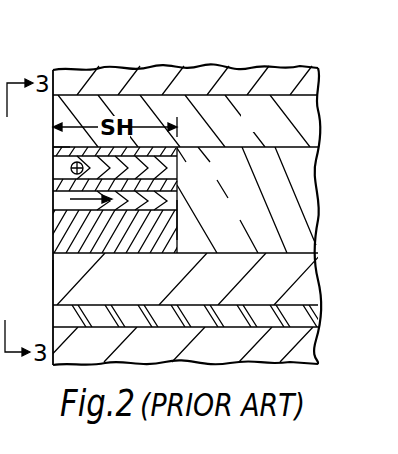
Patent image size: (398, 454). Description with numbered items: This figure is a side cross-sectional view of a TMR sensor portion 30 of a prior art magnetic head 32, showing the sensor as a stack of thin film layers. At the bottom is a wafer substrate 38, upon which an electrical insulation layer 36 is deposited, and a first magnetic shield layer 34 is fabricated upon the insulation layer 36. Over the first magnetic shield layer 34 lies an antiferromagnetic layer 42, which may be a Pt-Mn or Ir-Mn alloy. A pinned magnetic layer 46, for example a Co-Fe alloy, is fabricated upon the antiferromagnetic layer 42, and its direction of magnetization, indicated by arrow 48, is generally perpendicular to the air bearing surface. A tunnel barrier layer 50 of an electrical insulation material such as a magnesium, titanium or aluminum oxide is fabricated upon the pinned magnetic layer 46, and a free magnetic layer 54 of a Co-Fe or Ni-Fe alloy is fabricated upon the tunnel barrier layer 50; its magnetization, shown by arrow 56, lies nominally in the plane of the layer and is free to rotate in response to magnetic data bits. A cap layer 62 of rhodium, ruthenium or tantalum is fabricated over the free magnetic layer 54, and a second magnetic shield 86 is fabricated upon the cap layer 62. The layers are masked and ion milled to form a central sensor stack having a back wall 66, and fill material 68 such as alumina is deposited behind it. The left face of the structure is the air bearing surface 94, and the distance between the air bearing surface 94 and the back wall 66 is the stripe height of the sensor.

The TMR sensor portion 30 is at (68, 58).
The prior art magnetic head 32 is at (97, 60).
The first magnetic shield layer 34 is at (222, 291).
The electrical insulation layer 36 is at (63, 318).
The wafer substrate 38 is at (112, 355).
The antiferromagnetic layer 42 is at (63, 230).
The pinned magnetic layer 46 is at (67, 205).
The arrow 48 is at (68, 192).
The tunnel barrier layer 50 is at (203, 188).
The free magnetic layer 54 is at (63, 172).
The arrow 56 is at (54, 158).
The cap layer 62 is at (53, 146).
The back wall 66 is at (180, 222).
The fill material 68 is at (300, 205).
The second magnetic shield 86 is at (268, 130).
The air bearing surface 94 is at (53, 273).